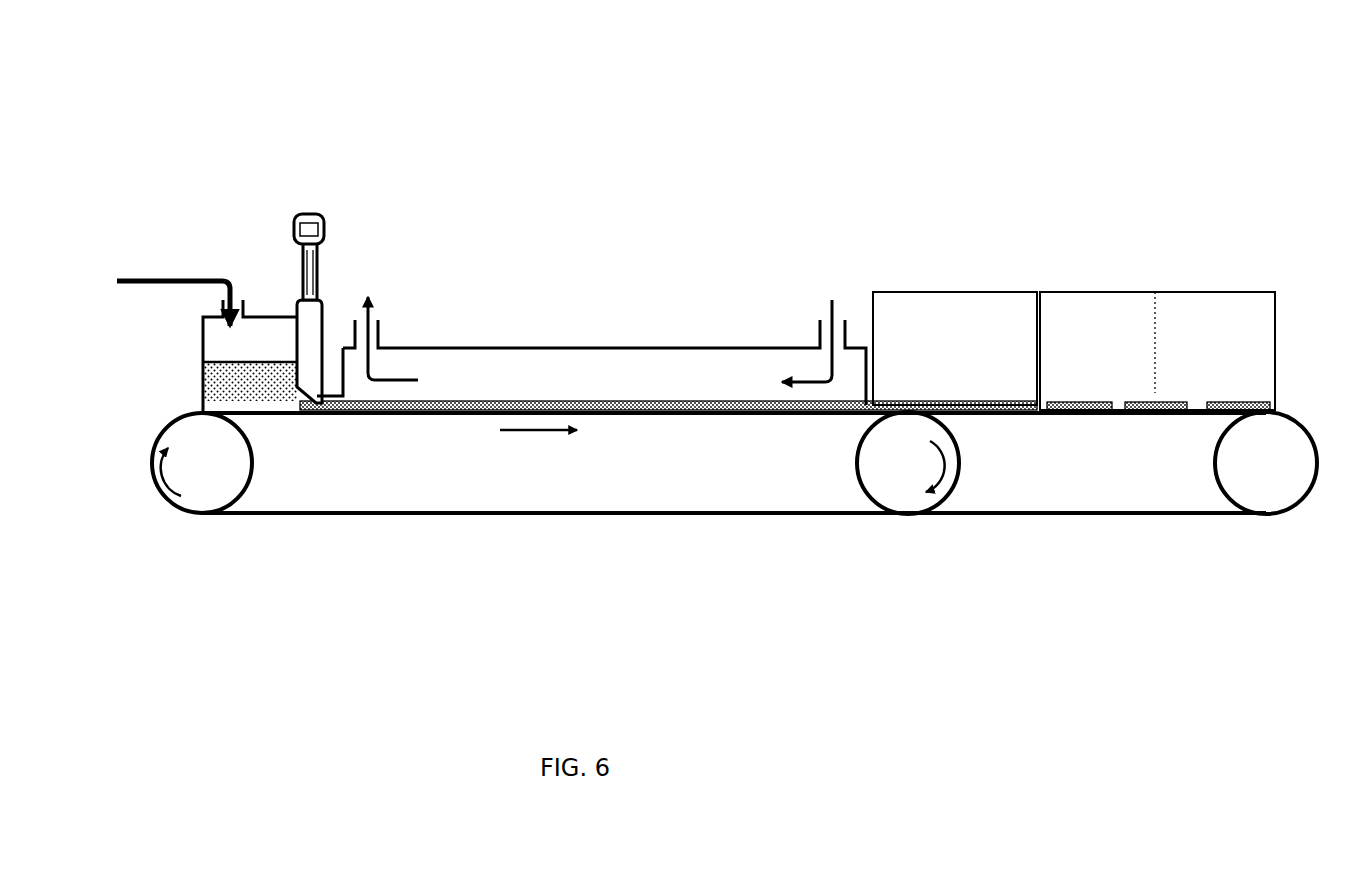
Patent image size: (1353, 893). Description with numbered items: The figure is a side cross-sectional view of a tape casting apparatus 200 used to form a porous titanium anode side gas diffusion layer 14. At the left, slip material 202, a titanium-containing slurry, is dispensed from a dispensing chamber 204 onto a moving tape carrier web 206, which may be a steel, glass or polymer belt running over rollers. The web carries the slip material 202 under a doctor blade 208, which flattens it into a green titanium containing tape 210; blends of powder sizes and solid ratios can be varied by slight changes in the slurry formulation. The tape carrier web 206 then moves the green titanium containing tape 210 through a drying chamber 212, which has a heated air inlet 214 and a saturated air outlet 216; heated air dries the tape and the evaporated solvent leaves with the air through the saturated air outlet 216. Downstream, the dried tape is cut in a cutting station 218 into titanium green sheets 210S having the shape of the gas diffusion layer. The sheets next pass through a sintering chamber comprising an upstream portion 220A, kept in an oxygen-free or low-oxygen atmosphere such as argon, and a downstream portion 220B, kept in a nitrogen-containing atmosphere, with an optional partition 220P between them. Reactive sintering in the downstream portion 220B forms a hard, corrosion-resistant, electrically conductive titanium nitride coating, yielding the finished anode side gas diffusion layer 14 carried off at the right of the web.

The tape casting apparatus 200 is at (683, 69).
The slip material 202 is at (222, 383).
The dispensing chamber 204 is at (203, 333).
The tape carrier web 206 is at (615, 504).
The doctor blade 208 is at (297, 313).
The green titanium containing tape 210 is at (700, 415).
The titanium green sheets 210S is at (1065, 410).
The drying chamber 212 is at (738, 393).
The heated air inlet 214 is at (813, 340).
The saturated air outlet 216 is at (428, 322).
The cutting station 218 is at (958, 393).
The upstream portion 220A is at (1242, 259).
The downstream portion 220B is at (1238, 307).
The partition 220P is at (1152, 377).
The anode side gas diffusion layer 14 is at (1250, 401).